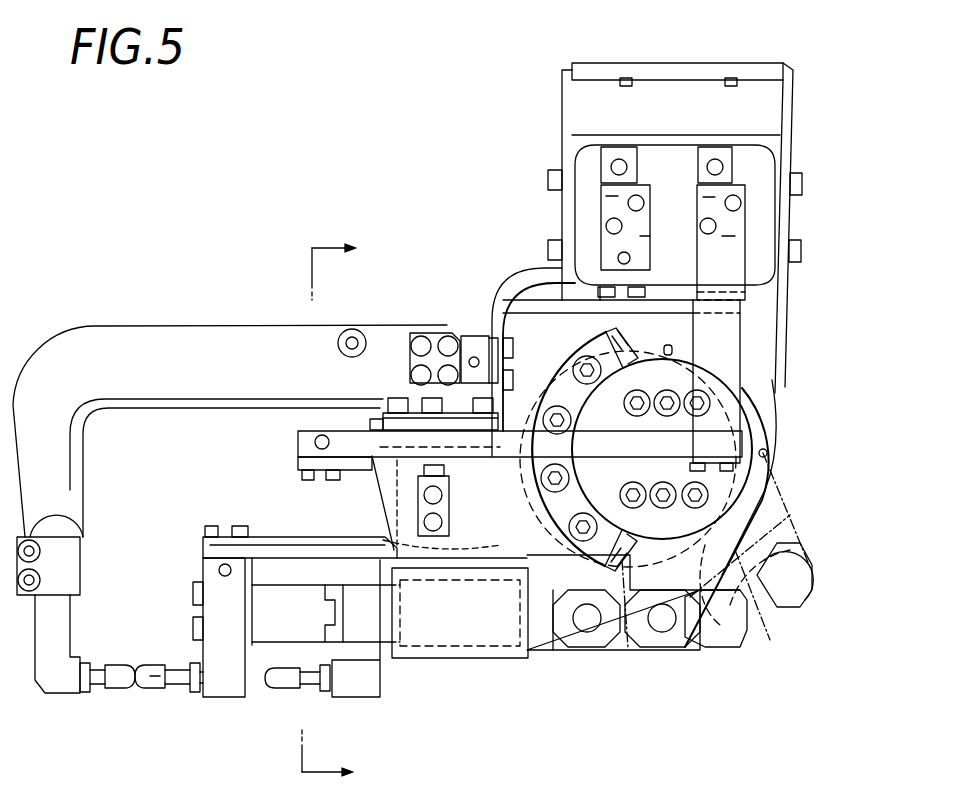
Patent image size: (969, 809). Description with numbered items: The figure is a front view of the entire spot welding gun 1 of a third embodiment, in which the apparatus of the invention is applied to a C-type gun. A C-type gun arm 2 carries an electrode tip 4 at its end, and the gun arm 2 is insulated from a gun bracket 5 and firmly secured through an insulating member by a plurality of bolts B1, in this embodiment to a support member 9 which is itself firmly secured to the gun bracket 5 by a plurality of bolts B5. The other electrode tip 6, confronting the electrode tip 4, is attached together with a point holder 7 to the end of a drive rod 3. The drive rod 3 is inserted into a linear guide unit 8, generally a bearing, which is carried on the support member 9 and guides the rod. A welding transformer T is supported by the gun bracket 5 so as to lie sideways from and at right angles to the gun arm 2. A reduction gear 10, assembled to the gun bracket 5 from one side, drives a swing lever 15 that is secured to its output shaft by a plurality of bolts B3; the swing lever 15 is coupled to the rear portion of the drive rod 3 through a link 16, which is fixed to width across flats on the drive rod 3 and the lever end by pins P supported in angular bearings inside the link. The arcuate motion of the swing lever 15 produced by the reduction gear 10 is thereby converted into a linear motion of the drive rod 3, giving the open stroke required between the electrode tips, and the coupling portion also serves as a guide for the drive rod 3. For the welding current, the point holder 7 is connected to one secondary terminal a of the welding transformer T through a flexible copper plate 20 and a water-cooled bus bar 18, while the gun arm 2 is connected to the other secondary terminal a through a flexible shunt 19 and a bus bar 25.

The spot welding gun 1 is at (250, 295).
The C-type gun arm 2 is at (186, 348).
The drive rod 3 is at (541, 632).
The electrode tip 4 is at (116, 685).
The gun bracket 5 is at (690, 76).
The electrode tip 6 is at (146, 688).
The point holder 7 is at (226, 672).
The linear guide unit 8 is at (446, 643).
The support member 9 is at (490, 545).
The reduction gear 10 is at (773, 470).
The swing lever 15 is at (763, 527).
The link 16 is at (766, 622).
The water-cooled bus bar 18 is at (297, 432).
The flexible shunt 19 is at (513, 284).
The flexible copper plate 20 is at (392, 546).
The bus bar 25 is at (481, 345).
The secondary terminal a is at (608, 187).
The bolts B1 is at (478, 392).
The bolts B3 is at (640, 395).
The bolts B5 is at (556, 415).
The pins P is at (588, 628).
The welding transformer T is at (752, 160).